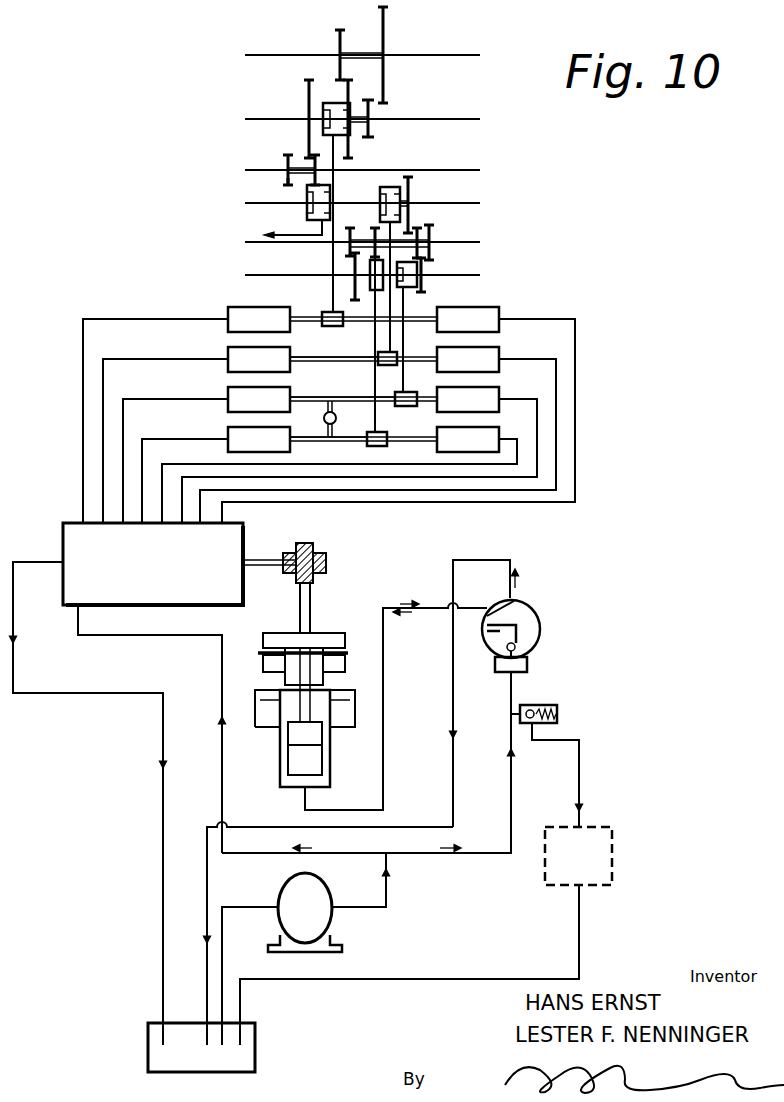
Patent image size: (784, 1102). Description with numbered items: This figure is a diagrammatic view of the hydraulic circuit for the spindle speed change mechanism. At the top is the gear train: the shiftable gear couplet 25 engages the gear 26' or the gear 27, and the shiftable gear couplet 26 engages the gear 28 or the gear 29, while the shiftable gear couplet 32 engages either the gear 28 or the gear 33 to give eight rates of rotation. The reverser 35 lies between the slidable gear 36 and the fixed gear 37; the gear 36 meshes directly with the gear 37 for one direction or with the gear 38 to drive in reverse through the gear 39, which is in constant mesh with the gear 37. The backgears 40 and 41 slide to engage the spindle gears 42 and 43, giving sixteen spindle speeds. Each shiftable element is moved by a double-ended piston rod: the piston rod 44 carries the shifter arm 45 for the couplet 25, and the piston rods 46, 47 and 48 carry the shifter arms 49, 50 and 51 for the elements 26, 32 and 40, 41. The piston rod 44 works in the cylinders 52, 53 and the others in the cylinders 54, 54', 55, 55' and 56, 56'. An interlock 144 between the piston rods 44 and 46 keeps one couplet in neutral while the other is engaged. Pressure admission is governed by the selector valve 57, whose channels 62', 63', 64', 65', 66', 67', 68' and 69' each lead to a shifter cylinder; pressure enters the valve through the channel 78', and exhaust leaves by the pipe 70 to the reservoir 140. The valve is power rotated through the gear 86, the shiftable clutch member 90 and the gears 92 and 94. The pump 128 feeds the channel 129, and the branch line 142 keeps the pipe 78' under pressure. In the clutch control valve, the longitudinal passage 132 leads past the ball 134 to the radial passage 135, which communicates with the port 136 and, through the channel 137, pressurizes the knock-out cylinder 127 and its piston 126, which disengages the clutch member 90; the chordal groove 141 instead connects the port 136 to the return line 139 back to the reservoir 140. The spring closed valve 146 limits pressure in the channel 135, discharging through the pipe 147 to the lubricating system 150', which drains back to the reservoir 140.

The shiftable gear couplet 25 is at (372, 290).
The shiftable gear couplet 26 is at (429, 279).
The gear 26' is at (302, 243).
The gear 27 is at (363, 238).
The gear 28 is at (402, 200).
The gear 29 is at (432, 241).
The shiftable gear couplet 32 is at (406, 175).
The gear 33 is at (420, 236).
The reverser 35 is at (290, 180).
The gear 36 is at (306, 210).
The gear 37 is at (307, 99).
The gear 38 is at (286, 162).
The gear 39 is at (318, 172).
The backgear 40 is at (351, 148).
The backgear 41 is at (372, 133).
The gear 42 is at (338, 42).
The gear 43 is at (386, 30).
The piston rod 44 is at (338, 440).
The shifter arm 45 is at (380, 432).
The piston rod 46 is at (327, 397).
The piston rod 47 is at (328, 357).
The piston rod 48 is at (320, 312).
The shifter arm 49 is at (408, 360).
The shifter arm 50 is at (385, 349).
The shifter arm 51 is at (332, 300).
The cylinder 52 is at (259, 439).
The cylinder 53 is at (468, 439).
The cylinder 54 is at (259, 399).
The cylinder 54' is at (468, 399).
The cylinder 55 is at (259, 359).
The cylinder 55' is at (468, 359).
The cylinder 56 is at (259, 319).
The cylinder 56' is at (468, 319).
The selector valve 57 is at (153, 564).
The channel 62' is at (137, 421).
The channel 63' is at (165, 441).
The channel 64' is at (175, 461).
The channel 65' is at (185, 481).
The channel 66' is at (398, 423).
The channel 67' is at (378, 443).
The channel 68' is at (359, 463).
The channel 69' is at (339, 483).
The pipe 70 is at (50, 562).
The channel 78' is at (127, 729).
The gear 86 is at (258, 710).
The shiftable clutch member 90 is at (264, 660).
The gear 92 is at (327, 562).
The gear 94 is at (313, 546).
The piston 126 is at (305, 735).
The cylinder 127 is at (305, 765).
The pump 128 is at (282, 959).
The channel 129 is at (513, 805).
The longitudinal passage 132 is at (528, 666).
The ball 134 is at (516, 646).
The radial passage 135 is at (490, 626).
The port 136 is at (490, 612).
The channel 137 is at (384, 718).
The return line 139 is at (512, 600).
The reservoir 140 is at (201, 1047).
The chordal groove 141 is at (500, 598).
The branch line 142 is at (224, 795).
The interlock 144 is at (333, 410).
The spring closed valve 146 is at (532, 705).
The pipe 147 is at (582, 762).
The lubricating system 150' is at (578, 856).